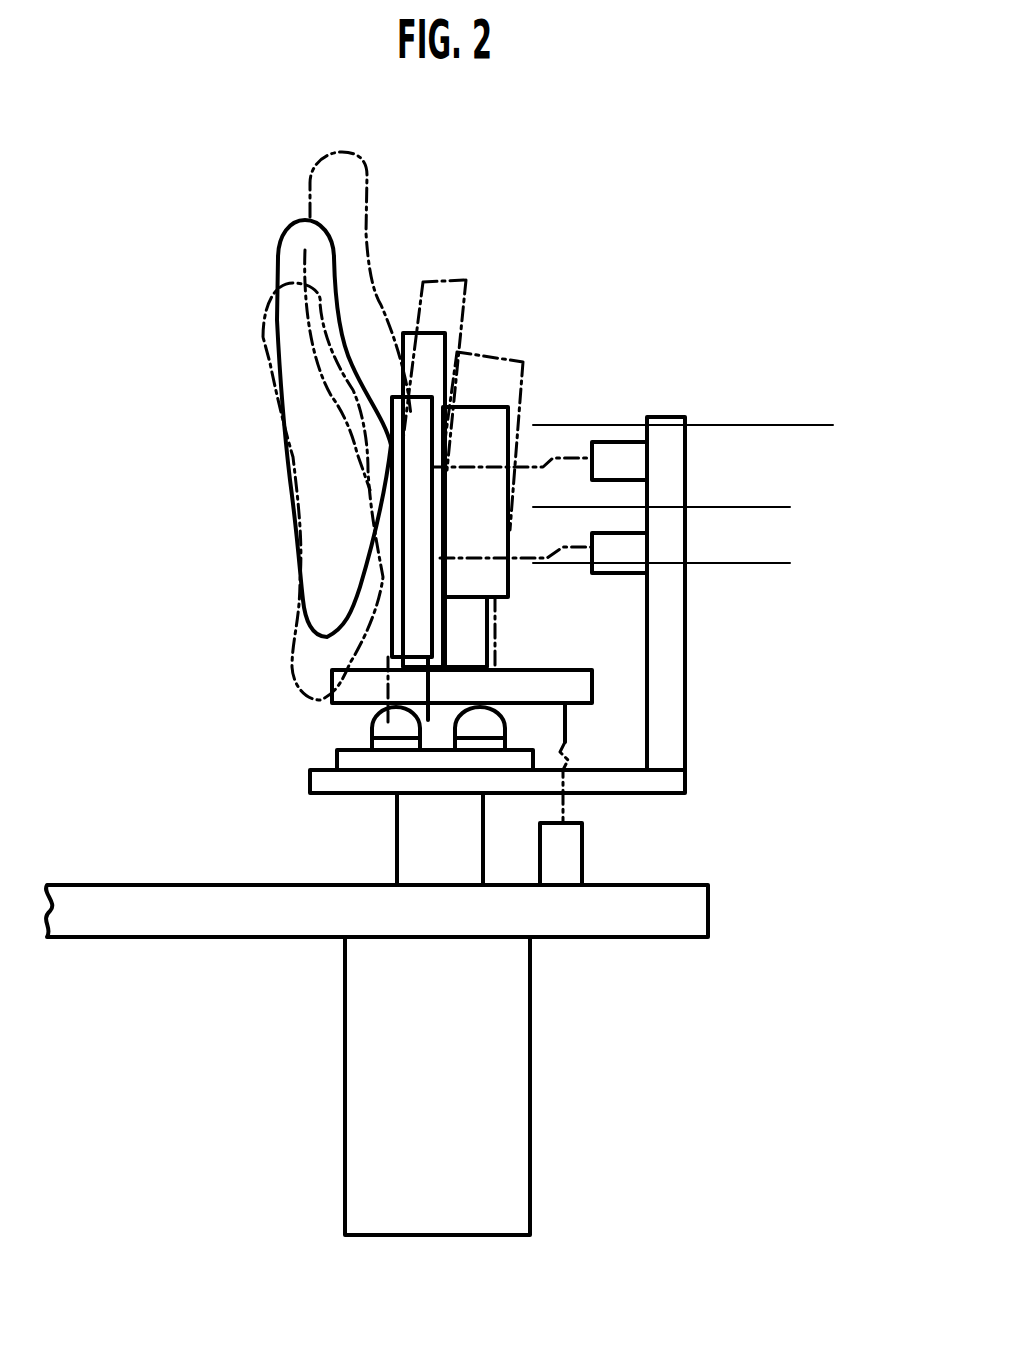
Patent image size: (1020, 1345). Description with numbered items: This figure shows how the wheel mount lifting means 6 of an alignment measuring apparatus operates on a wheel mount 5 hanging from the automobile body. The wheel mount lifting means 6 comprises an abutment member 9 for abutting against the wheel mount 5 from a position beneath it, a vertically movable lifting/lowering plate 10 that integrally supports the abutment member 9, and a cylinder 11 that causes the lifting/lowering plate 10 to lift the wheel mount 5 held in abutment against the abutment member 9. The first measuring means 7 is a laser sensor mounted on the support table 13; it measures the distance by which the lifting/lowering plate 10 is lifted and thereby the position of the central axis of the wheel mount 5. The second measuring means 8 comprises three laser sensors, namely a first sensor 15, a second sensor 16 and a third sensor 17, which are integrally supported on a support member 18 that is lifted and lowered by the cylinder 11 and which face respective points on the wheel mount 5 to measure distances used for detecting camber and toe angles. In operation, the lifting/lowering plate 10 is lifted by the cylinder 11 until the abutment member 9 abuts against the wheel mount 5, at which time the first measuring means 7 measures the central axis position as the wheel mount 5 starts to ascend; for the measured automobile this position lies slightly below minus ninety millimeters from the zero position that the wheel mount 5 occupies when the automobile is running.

The wheel mount 5 is at (481, 425).
The wheel mount lifting means 6 is at (611, 596).
The first measuring means 7 is at (560, 843).
The second measuring means 8 is at (611, 550).
The abutment member 9 is at (468, 636).
The lifting/lowering plate 10 is at (350, 703).
The cylinder 11 is at (490, 1070).
The support table 13 is at (184, 912).
The first sensor 15 is at (615, 457).
The second sensor 16 is at (635, 597).
The third sensor 17 is at (615, 575).
The support member 18 is at (665, 718).